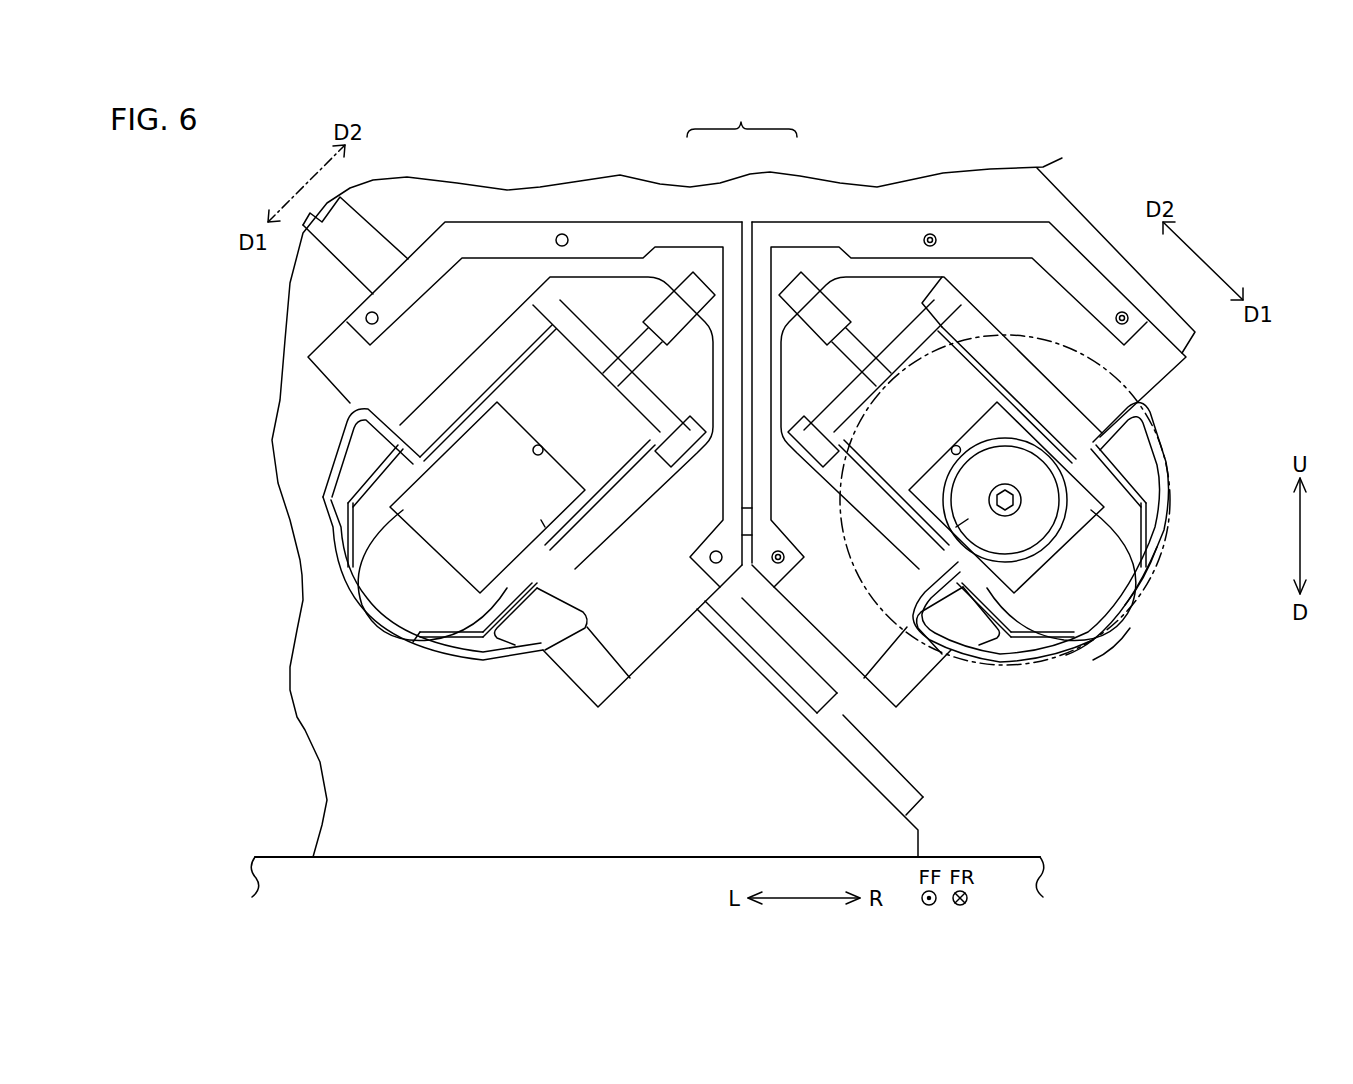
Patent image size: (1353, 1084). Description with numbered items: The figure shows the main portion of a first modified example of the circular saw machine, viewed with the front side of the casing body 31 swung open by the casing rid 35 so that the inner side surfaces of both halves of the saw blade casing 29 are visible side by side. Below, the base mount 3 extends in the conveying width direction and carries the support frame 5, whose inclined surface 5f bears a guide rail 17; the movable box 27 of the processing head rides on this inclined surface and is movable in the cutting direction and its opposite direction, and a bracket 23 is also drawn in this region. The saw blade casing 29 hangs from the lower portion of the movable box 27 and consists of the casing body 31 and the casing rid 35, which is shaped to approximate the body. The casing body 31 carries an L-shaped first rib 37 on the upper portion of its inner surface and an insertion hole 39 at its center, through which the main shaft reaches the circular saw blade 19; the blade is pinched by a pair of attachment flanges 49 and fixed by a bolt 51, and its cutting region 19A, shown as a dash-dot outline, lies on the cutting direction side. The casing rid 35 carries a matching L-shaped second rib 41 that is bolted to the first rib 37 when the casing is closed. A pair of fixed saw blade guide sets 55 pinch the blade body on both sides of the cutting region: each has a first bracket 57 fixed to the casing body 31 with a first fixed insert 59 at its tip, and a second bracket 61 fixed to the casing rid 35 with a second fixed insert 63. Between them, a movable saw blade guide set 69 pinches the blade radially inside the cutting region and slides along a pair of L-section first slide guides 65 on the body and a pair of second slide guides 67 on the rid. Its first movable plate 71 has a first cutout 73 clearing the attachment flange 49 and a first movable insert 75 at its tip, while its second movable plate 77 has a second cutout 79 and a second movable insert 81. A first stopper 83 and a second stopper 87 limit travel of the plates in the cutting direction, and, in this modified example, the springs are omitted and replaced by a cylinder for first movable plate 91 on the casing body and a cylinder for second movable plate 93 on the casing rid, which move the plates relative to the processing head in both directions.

The base mount 3 is at (980, 857).
The support frame 5 is at (550, 857).
The inclined surface 5f is at (845, 743).
The guide rail 17 is at (875, 763).
The circular saw blade 19 is at (1175, 453).
The cutting region 19A is at (1130, 628).
The bracket 23 is at (770, 645).
The movable box 27 is at (1053, 193).
The saw blade casing 29 is at (742, 118).
The casing body 31 is at (797, 220).
The casing rid 35 is at (687, 220).
The first rib 37 is at (978, 228).
The insertion hole 39 is at (1007, 440).
The second rib 41 is at (470, 230).
The attachment flange 49 is at (967, 515).
The bolt 51 is at (1017, 510).
The fixed saw blade guide set 55 is at (320, 497).
The first bracket 57 is at (1155, 483).
The first fixed insert 59 is at (1158, 548).
The second bracket 61 is at (345, 452).
The second fixed insert 63 is at (340, 543).
The first slide guide 65 is at (963, 303).
The second slide guide 67 is at (473, 357).
The movable saw blade guide set 69 is at (1155, 600).
The first movable plate 71 is at (890, 423).
The first cutout 73 is at (923, 482).
The first movable insert 75 is at (1097, 637).
The second movable plate 77 is at (623, 407).
The second cutout 79 is at (548, 530).
The second movable insert 81 is at (380, 627).
The first stopper 83 is at (956, 445).
The second stopper 87 is at (540, 446).
The cylinder for first movable plate 91 is at (837, 308).
The cylinder for second movable plate 93 is at (658, 308).